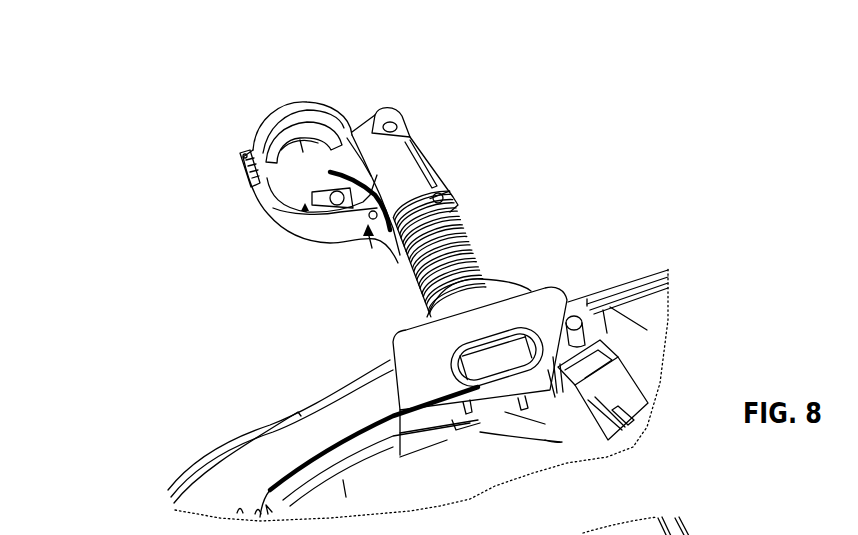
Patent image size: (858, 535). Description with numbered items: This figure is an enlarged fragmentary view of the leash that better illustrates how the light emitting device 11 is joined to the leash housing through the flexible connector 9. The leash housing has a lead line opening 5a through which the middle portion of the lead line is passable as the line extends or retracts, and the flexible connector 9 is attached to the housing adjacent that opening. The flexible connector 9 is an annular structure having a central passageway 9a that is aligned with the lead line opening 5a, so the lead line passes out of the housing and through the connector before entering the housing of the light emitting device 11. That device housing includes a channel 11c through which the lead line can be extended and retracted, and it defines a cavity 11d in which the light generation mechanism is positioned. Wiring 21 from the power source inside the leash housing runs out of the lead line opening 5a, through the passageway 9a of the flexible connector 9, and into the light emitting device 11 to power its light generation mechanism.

The light emitting device 11 is at (234, 136).
The channel 11c is at (383, 162).
The cavity 11d is at (302, 155).
The flexible connector 9 is at (458, 238).
The central passageway 9a is at (411, 190).
The wiring 21 is at (326, 441).
The lead line opening 5a is at (502, 366).